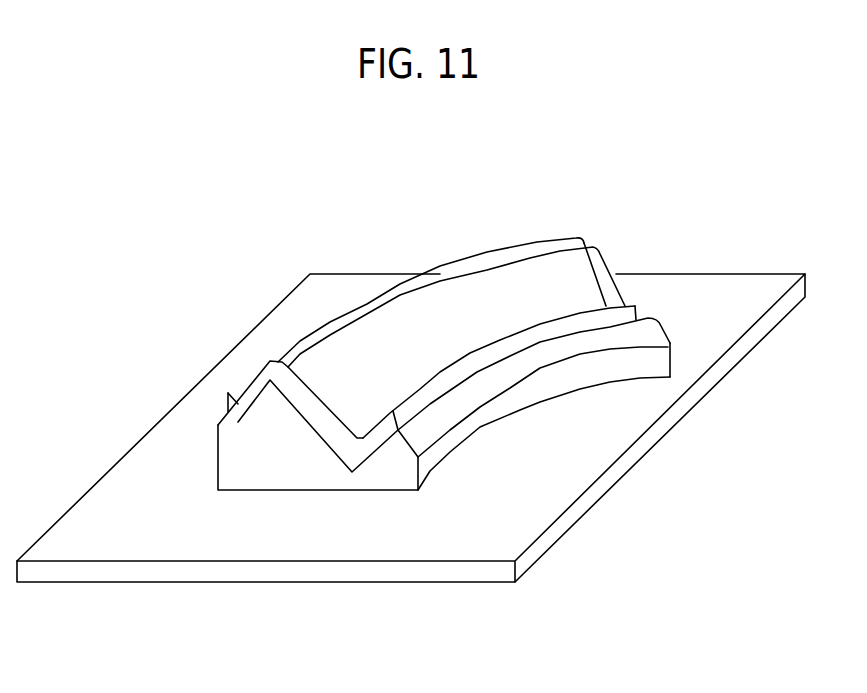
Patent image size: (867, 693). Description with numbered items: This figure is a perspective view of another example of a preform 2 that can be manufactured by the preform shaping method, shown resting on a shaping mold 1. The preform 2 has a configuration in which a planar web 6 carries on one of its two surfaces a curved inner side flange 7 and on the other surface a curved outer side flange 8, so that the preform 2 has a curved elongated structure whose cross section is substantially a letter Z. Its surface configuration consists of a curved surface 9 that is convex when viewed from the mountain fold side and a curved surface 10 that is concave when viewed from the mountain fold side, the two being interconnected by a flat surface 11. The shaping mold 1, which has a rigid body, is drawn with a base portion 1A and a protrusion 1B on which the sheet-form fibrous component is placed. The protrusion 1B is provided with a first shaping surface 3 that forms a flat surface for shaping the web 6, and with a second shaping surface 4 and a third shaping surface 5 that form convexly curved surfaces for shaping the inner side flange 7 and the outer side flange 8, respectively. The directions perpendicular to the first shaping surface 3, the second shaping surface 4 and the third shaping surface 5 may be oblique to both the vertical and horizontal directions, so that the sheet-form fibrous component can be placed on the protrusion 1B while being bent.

The shaping mold 1 is at (411, 470).
The base plate 1A is at (193, 537).
The protrusion 1B is at (299, 470).
The preform 2 is at (365, 408).
The first shaping surface 3 is at (605, 277).
The second shaping surface 4 is at (650, 317).
The third shaping surface 5 is at (217, 420).
The web 6 is at (492, 291).
The inner side flange 7 is at (367, 445).
The outer side flange 8 is at (238, 390).
The curved surface 9 is at (284, 355).
The curved surface 10 is at (478, 373).
The flat surface 11 is at (436, 304).